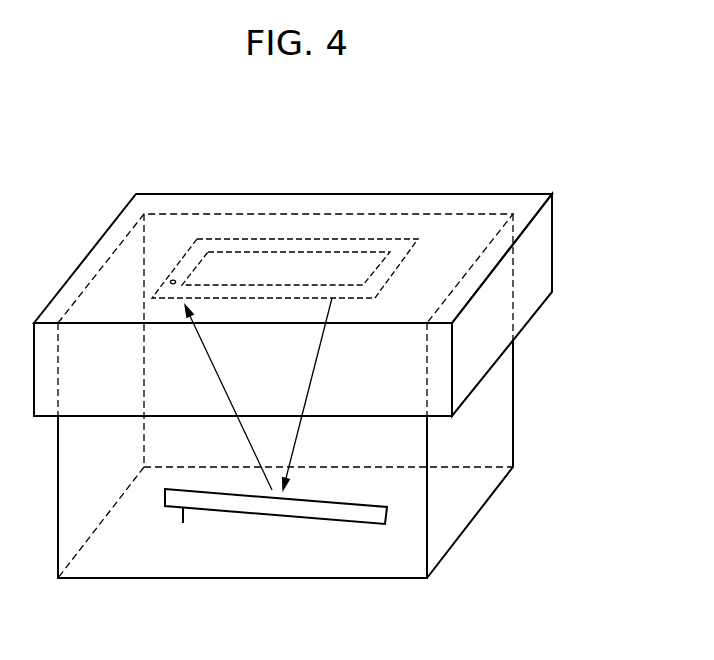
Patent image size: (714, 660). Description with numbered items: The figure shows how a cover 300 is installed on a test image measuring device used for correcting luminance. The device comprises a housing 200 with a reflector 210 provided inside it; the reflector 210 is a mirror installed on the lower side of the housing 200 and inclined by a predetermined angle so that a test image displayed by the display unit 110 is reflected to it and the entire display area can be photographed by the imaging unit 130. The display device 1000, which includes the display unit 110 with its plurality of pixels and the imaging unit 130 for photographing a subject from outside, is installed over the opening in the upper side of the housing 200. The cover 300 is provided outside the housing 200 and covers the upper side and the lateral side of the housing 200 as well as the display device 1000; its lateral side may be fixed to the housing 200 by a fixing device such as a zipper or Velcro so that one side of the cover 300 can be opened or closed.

The display device 1000 is at (263, 240).
The display unit 110 is at (335, 252).
The imaging unit 130 is at (173, 282).
The housing 200 is at (514, 400).
The reflector 210 is at (320, 512).
The cover 300 is at (502, 194).